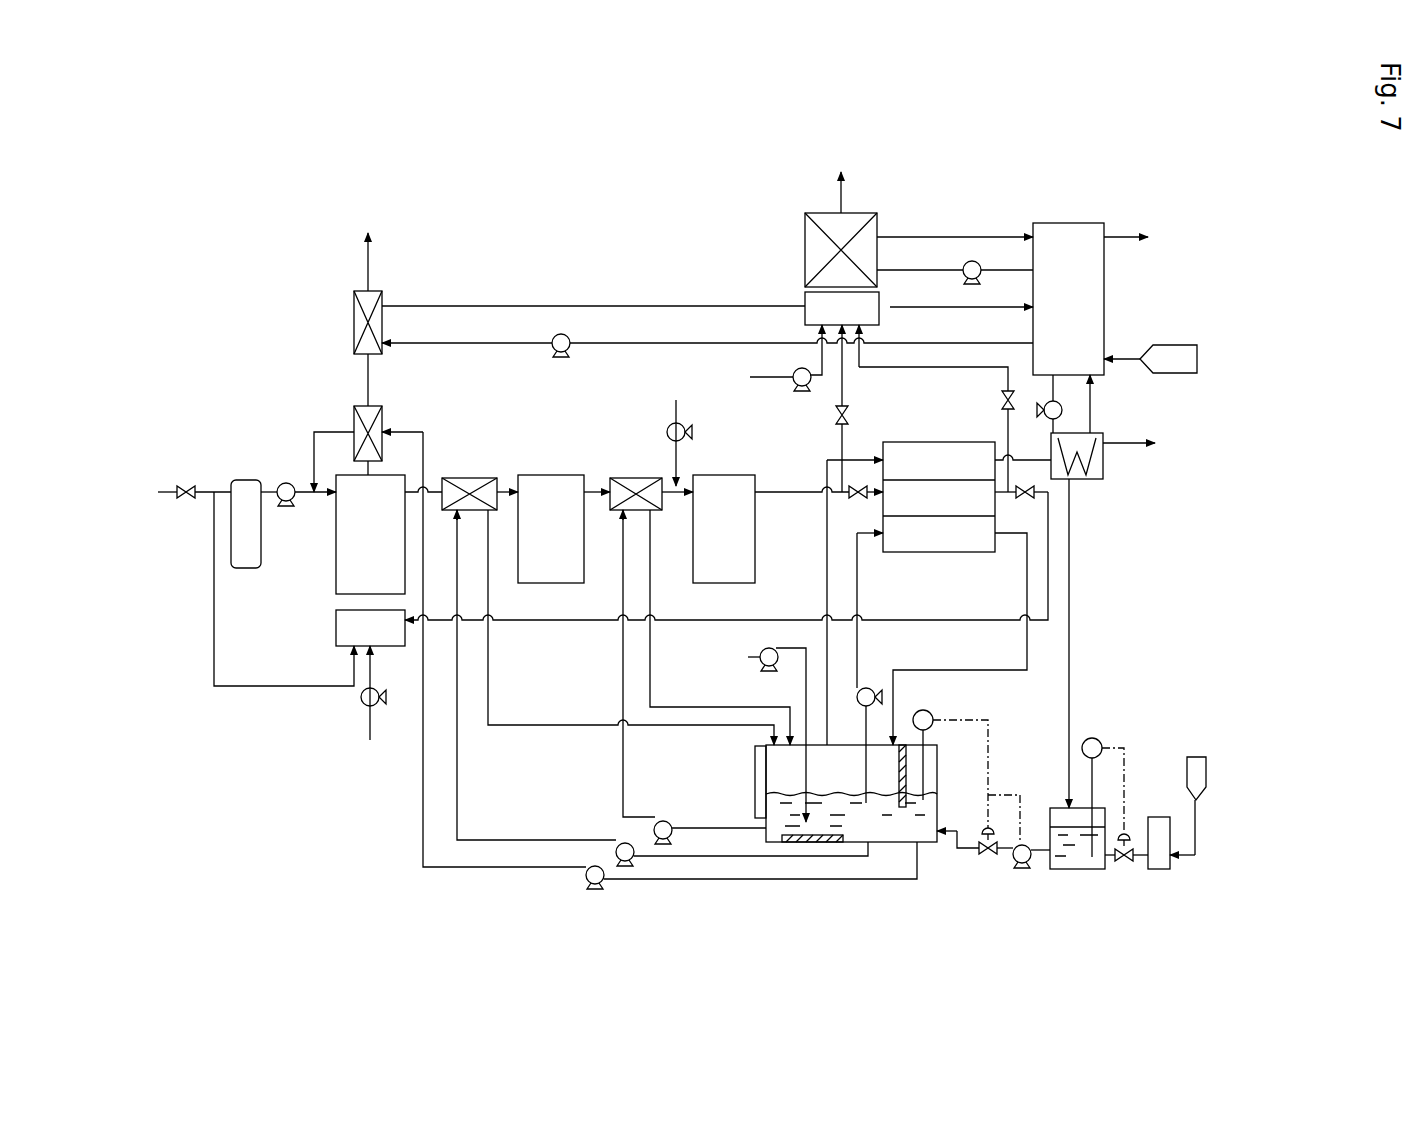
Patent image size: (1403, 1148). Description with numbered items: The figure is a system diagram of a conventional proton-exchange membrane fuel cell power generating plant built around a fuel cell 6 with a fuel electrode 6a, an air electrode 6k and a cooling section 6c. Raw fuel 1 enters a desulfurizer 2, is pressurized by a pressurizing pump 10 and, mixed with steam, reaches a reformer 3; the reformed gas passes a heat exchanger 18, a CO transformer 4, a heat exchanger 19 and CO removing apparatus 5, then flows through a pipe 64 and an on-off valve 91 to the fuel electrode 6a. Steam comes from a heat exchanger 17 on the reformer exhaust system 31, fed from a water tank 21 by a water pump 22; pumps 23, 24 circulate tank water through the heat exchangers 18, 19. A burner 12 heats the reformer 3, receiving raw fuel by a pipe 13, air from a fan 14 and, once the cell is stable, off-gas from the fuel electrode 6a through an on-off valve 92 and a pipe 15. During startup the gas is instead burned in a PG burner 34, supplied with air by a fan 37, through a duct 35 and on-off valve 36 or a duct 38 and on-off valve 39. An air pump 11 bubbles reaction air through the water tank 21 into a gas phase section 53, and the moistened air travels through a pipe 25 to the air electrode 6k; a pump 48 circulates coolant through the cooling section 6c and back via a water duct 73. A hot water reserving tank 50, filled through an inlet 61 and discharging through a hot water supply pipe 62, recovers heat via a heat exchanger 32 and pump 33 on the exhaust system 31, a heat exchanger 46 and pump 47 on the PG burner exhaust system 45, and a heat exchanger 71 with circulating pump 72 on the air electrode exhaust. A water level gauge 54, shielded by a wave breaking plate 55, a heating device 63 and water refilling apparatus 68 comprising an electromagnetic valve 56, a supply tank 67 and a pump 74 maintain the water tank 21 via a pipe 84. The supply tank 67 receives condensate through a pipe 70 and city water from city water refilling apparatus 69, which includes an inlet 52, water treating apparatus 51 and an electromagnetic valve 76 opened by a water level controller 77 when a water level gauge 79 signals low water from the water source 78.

The raw fuel 1 is at (165, 481).
The desulfurizer 2 is at (247, 570).
The reformer 3 is at (336, 556).
The CO transformer 4 is at (550, 584).
The CO removing apparatus 5 is at (726, 582).
The fuel cell 6 is at (926, 441).
The air electrode 6k is at (893, 446).
The fuel electrode 6a is at (881, 502).
The cooling section 6c is at (895, 552).
The pressurizing pump 10 is at (286, 482).
The air pump 11 is at (760, 668).
The burner 12 is at (336, 629).
The pipe 13 is at (214, 644).
The fan 14 is at (360, 700).
The pipe 15 is at (528, 620).
The heat exchanger 17 is at (354, 410).
The heat exchanger 18 is at (468, 478).
The heat exchanger 19 is at (626, 480).
The water tank 21 is at (938, 810).
The water pump 22 is at (586, 876).
The pump 23 is at (622, 844).
The pump 24 is at (666, 823).
The pipe 25 is at (827, 558).
The exhaust system 31 is at (369, 370).
The heat exchanger 32 is at (354, 314).
The pump 33 is at (567, 350).
The PG burner 34 is at (805, 298).
The duct 35 is at (842, 438).
The on-off valve 36 is at (832, 415).
The fan 37 is at (793, 385).
The duct 38 is at (1007, 432).
The on-off valve 39 is at (1002, 400).
The exhaust system 45 is at (840, 194).
The heat exchanger 46 is at (805, 230).
The pump 47 is at (964, 267).
The pump 48 is at (874, 688).
The hot water reserving tank 50 is at (1104, 276).
The water treating apparatus 51 is at (1158, 870).
The inlet 52 is at (1195, 828).
The gas phase section 53 is at (840, 761).
The water level gauge 54 is at (906, 762).
The wave breaking plate 55 is at (898, 772).
The electromagnetic valve 56 is at (990, 860).
The inlet 61 is at (1128, 362).
The hot water supply pipe 62 is at (1118, 237).
The heating device 63 is at (808, 845).
The pipe 64 is at (820, 499).
The supply tank 67 is at (1064, 812).
The water refilling apparatus 68 is at (972, 873).
The city water refilling apparatus 69 is at (1206, 863).
The pipe 70 is at (1069, 576).
The heat exchanger 71 is at (1104, 468).
The circulating pump 72 is at (1048, 416).
The water duct 73 is at (1031, 644).
The pump 74 is at (1024, 868).
The electromagnetic valve 76 is at (1126, 830).
The water level controller 77 is at (1092, 738).
The water source 78 is at (1196, 757).
The water level gauge 79 is at (1088, 844).
The pipe 84 is at (952, 838).
The on-off valve 91 is at (845, 481).
The on-off valve 92 is at (1033, 500).